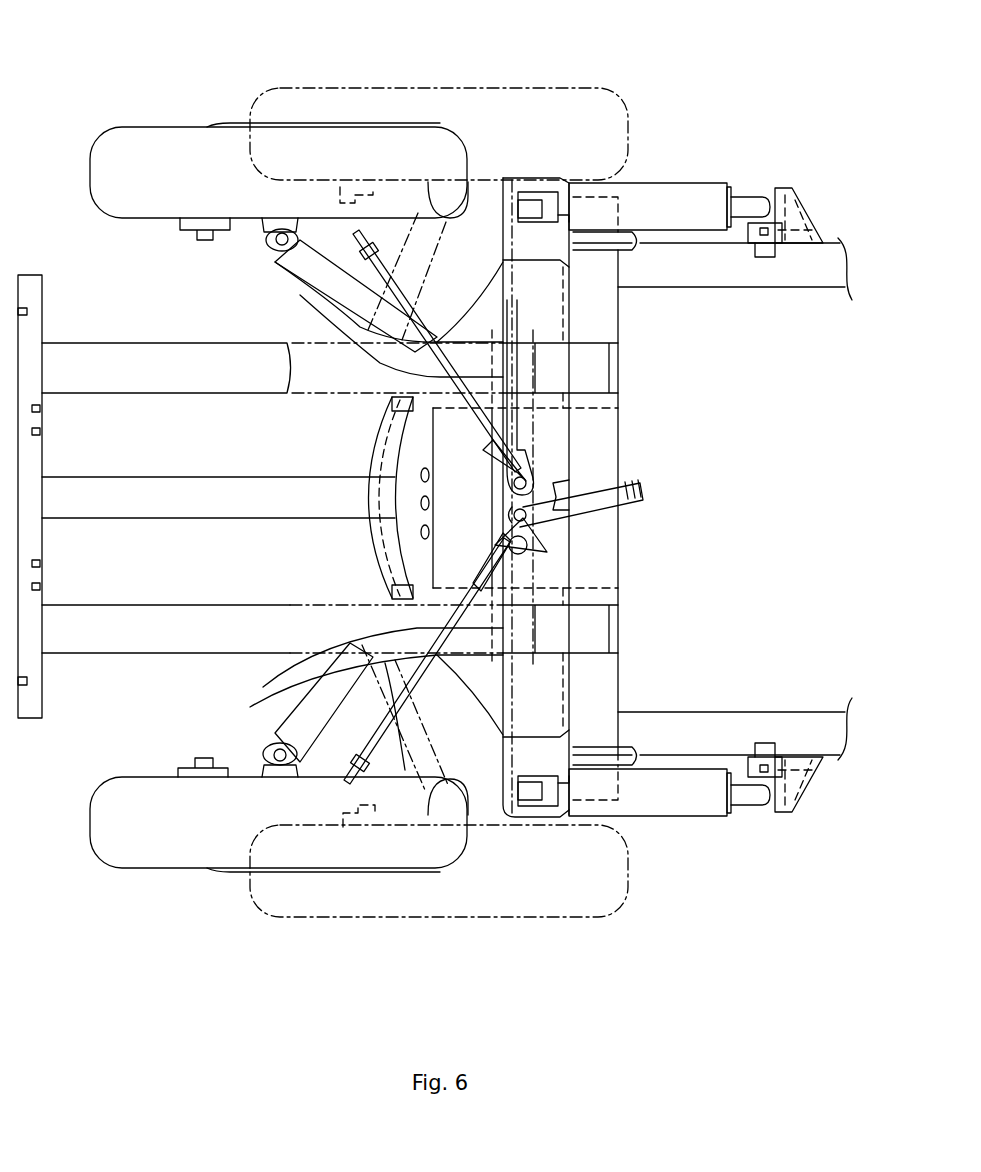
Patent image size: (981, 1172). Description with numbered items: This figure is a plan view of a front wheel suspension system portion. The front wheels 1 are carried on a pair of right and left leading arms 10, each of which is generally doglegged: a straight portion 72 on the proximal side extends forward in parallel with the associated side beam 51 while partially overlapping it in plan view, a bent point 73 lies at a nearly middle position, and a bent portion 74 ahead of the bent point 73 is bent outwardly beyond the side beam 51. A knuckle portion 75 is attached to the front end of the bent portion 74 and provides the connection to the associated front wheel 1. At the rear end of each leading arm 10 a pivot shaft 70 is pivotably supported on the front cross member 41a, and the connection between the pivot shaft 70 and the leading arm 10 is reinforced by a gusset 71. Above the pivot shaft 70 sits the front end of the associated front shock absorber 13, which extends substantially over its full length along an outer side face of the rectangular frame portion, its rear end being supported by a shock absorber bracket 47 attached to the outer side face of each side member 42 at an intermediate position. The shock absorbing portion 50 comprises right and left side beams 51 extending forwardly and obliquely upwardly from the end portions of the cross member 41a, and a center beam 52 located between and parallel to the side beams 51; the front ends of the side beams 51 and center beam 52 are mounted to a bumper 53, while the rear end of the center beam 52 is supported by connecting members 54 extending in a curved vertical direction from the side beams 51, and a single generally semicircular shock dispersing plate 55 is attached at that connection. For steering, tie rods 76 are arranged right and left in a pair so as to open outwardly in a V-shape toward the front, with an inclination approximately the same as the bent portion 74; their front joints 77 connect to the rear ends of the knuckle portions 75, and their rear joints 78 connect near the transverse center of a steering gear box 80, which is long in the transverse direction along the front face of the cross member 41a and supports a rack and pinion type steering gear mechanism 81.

The front wheel 1 is at (128, 127).
The leading arm 10 is at (300, 295).
The front shock absorber 13 is at (657, 183).
The front cross member 41a is at (617, 687).
The side member 42 is at (688, 288).
The shock absorber bracket 47 is at (807, 210).
The shock absorbing portion 50 is at (260, 560).
The side beam 51 is at (200, 393).
The center beam 52 is at (140, 507).
The bumper 53 is at (43, 470).
The connecting member 54 is at (373, 470).
The shock dispersing plate 55 is at (436, 487).
The pivot shaft 70 is at (515, 760).
The gusset 71 is at (470, 670).
The straight portion 72 is at (407, 627).
The bent point 73 is at (350, 647).
The bent portion 74 is at (325, 670).
The knuckle portion 75 is at (265, 750).
The tie rod 76 is at (405, 770).
The front joint 77 is at (347, 782).
The rear joint 78 is at (493, 527).
The steering gear box 80 is at (605, 422).
The steering gear mechanism 81 is at (565, 557).